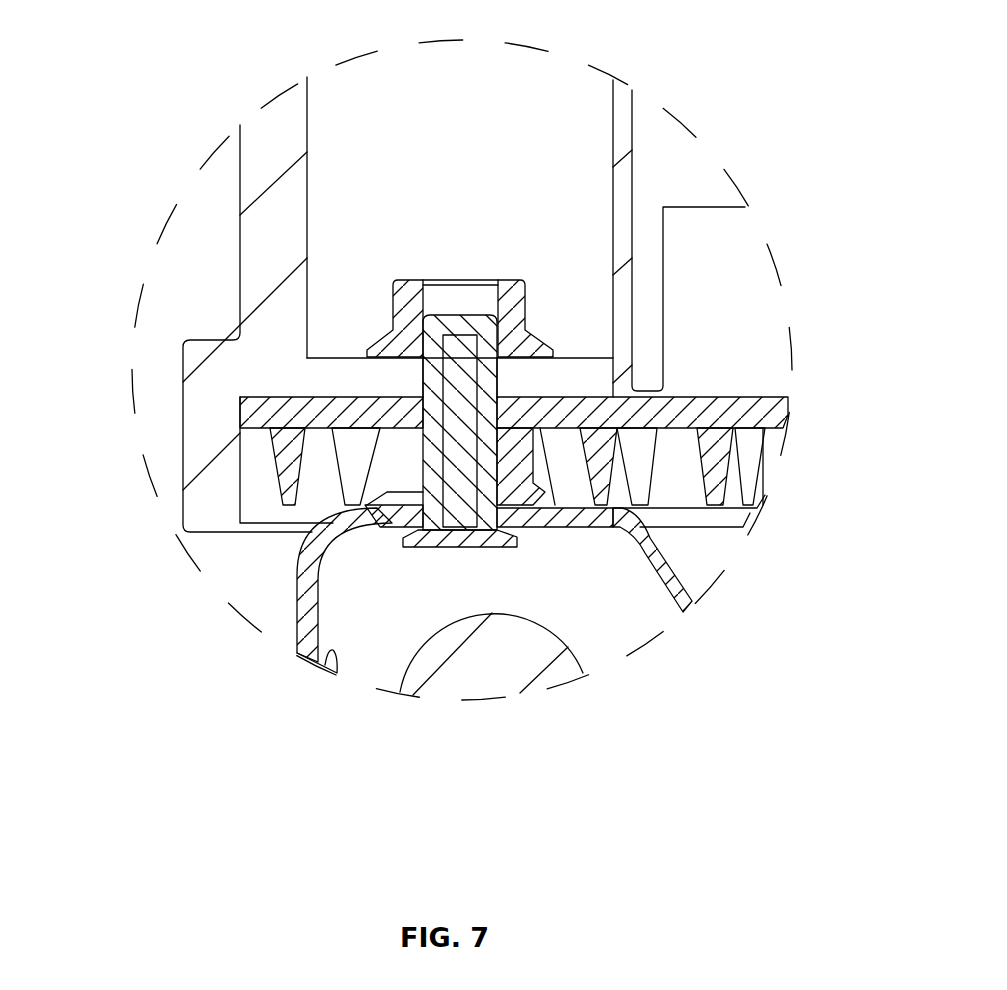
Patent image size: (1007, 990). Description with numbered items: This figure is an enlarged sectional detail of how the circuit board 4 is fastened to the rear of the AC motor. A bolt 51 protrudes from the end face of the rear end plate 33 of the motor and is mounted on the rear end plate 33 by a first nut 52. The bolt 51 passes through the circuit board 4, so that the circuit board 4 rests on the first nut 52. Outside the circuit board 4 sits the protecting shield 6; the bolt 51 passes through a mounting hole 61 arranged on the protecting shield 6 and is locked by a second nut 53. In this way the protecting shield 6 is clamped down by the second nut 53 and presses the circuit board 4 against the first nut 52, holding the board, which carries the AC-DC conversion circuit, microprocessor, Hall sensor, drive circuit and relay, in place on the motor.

The circuit board 4 is at (653, 397).
The protecting shield 6 is at (282, 212).
The rear end plate 33 is at (300, 625).
The bolt 51 is at (465, 468).
The first nut 52 is at (405, 470).
The second nut 53 is at (518, 308).
The mounting hole 61 is at (423, 375).